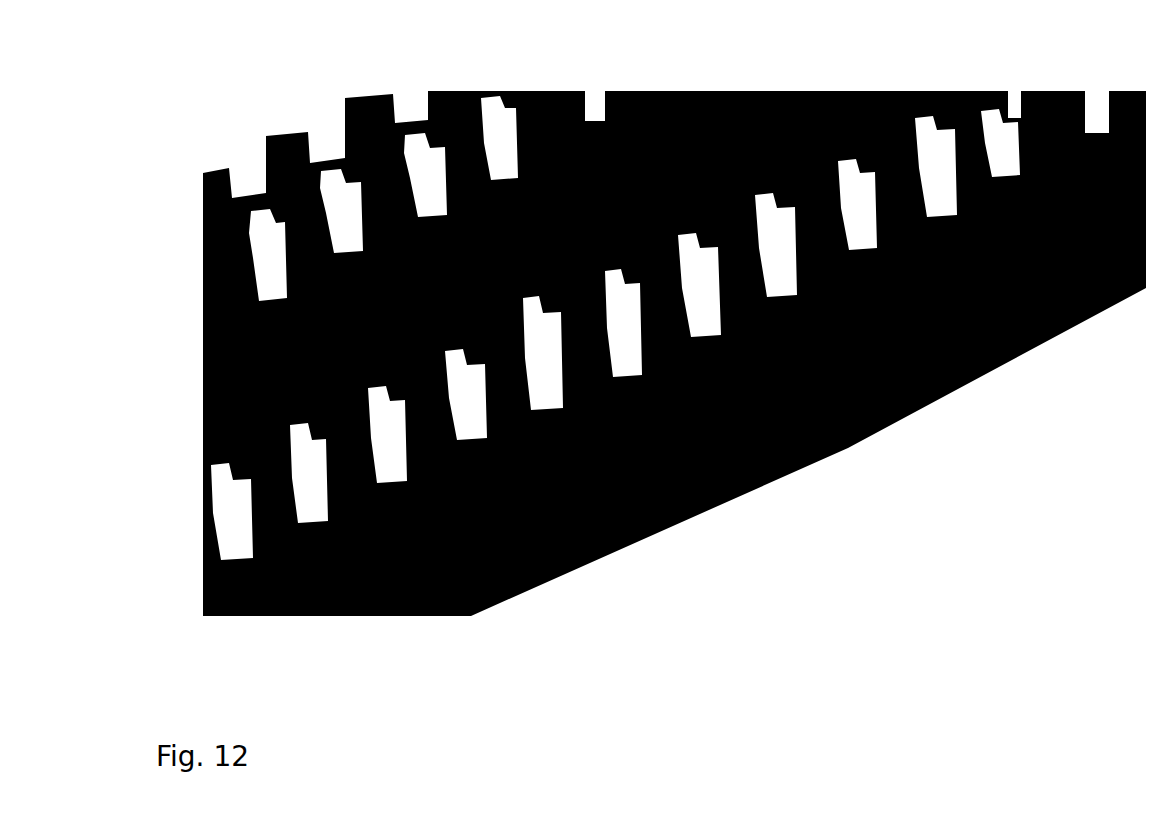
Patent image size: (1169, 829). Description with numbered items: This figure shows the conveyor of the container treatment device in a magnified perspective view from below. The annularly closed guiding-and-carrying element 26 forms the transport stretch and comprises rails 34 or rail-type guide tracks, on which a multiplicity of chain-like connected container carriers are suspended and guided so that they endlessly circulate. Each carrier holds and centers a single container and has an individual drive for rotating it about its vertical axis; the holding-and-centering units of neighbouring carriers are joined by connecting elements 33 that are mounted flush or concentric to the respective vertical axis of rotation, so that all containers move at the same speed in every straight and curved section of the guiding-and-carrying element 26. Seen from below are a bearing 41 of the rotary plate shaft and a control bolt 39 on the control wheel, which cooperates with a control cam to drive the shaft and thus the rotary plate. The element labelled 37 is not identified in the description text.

The guiding-and-carrying element 26 is at (413, 142).
The rails 34 is at (253, 197).
The control bolt 39 is at (660, 470).
The support rail 37 is at (777, 400).
The connecting elements 33 is at (873, 425).
The bearing 41 is at (1048, 320).